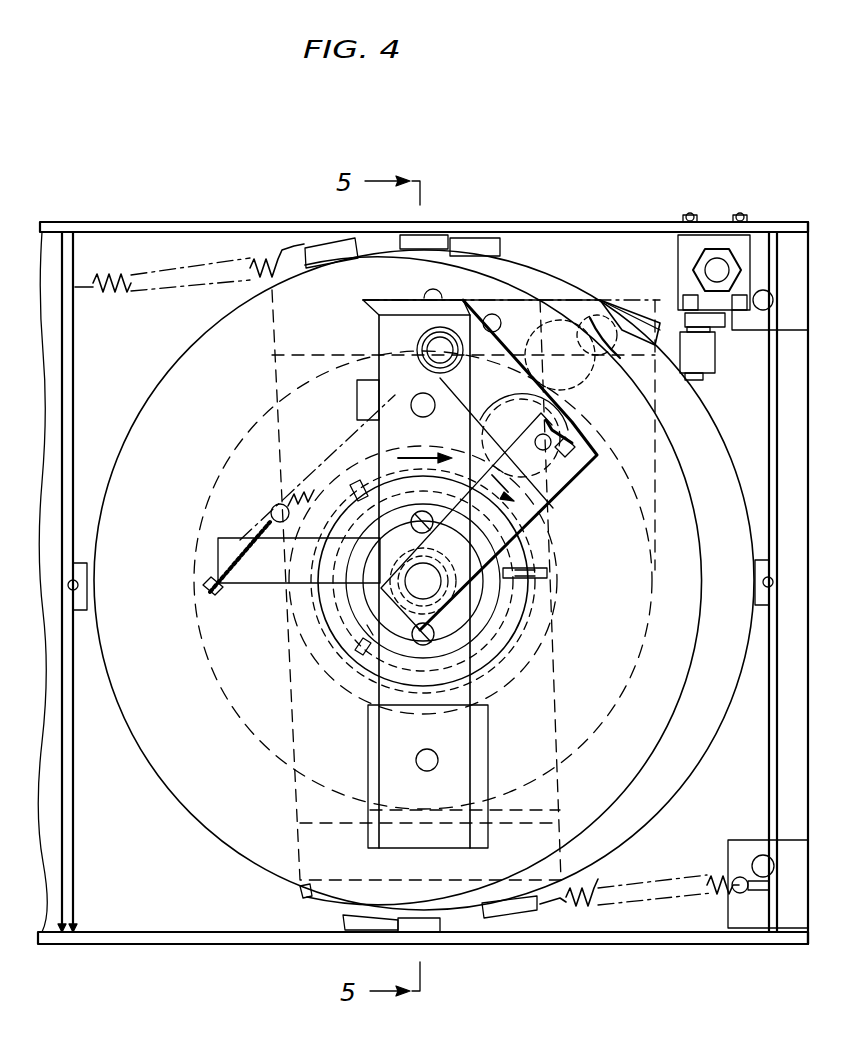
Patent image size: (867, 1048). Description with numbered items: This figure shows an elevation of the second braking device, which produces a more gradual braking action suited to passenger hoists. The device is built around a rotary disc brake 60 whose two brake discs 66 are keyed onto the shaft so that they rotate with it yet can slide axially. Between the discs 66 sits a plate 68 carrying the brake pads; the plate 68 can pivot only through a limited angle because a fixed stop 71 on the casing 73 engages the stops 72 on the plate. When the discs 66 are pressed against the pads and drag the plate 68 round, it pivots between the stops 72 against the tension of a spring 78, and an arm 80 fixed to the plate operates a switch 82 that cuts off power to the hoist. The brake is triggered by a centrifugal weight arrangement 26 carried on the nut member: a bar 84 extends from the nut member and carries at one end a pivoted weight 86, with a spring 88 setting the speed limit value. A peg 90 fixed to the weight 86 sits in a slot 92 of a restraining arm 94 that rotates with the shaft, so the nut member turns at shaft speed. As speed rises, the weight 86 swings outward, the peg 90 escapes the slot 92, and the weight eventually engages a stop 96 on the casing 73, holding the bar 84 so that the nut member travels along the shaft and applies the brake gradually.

The centrifugal weight arrangement 26 is at (514, 296).
The rotary disc brake 60 is at (194, 368).
The brake discs 66 is at (160, 745).
The plate 68 is at (300, 896).
The fixed stop 71 is at (420, 247).
The stops 72 is at (332, 244).
The casing 73 is at (623, 228).
The spring 78 is at (582, 906).
The arm 80 is at (667, 332).
The switch 82 is at (700, 367).
The bar 84 is at (455, 694).
The pivoted weight 86 is at (548, 402).
The spring 88 is at (288, 494).
The peg 90 is at (572, 440).
The slot 92 is at (572, 465).
The restraining arm 94 is at (552, 508).
The stop 96 is at (88, 596).